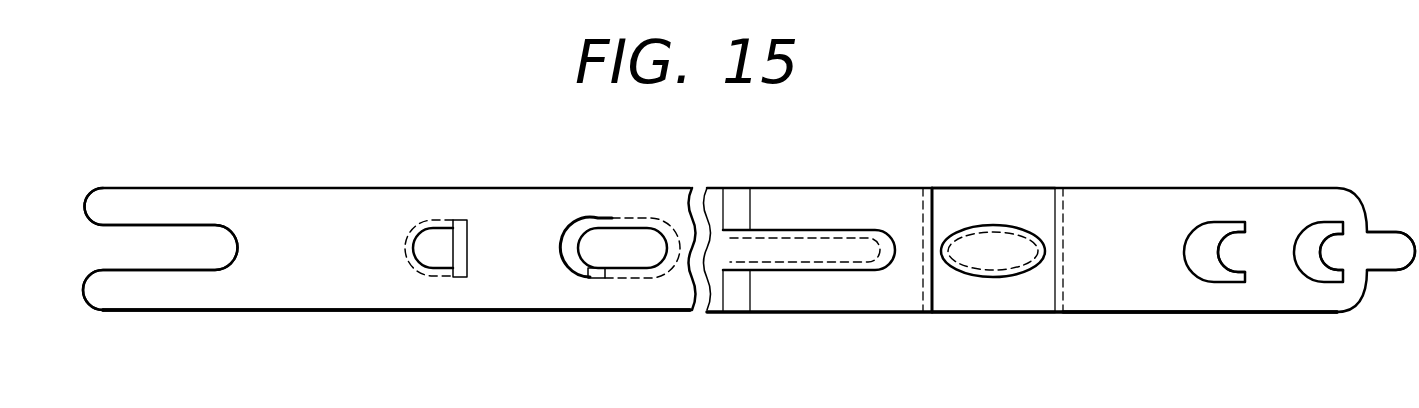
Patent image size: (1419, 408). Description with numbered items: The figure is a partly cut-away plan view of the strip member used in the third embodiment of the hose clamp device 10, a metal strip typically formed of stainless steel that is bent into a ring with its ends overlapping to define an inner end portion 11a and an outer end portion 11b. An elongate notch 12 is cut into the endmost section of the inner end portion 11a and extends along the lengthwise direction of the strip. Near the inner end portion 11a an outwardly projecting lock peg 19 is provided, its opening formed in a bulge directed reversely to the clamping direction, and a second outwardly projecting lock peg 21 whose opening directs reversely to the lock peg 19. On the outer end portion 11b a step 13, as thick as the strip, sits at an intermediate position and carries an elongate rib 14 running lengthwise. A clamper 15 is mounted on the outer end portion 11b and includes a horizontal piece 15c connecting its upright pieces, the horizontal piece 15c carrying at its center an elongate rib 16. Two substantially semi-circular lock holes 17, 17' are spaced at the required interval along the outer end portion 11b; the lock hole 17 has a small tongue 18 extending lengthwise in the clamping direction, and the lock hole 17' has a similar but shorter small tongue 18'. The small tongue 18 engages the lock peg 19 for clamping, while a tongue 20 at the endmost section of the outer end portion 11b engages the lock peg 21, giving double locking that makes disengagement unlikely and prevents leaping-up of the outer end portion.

The hose clamp device 10 is at (680, 320).
The inner end portion 11a is at (373, 297).
The outer end portion 11b is at (1147, 303).
The elongate notch 12 is at (198, 226).
The step 13 is at (842, 298).
The elongate rib 14 is at (818, 245).
The clamper 15 is at (1012, 208).
The horizontal piece 15c is at (1033, 300).
The elongate rib 16 is at (1005, 267).
The lock hole 17 is at (1201, 207).
The lock hole 17' is at (1318, 207).
The small tongue 18 is at (1224, 301).
The small tongue 18' is at (1313, 302).
The lock peg 19 is at (447, 228).
The tongue 20 is at (1392, 256).
The lock peg 21 is at (600, 255).